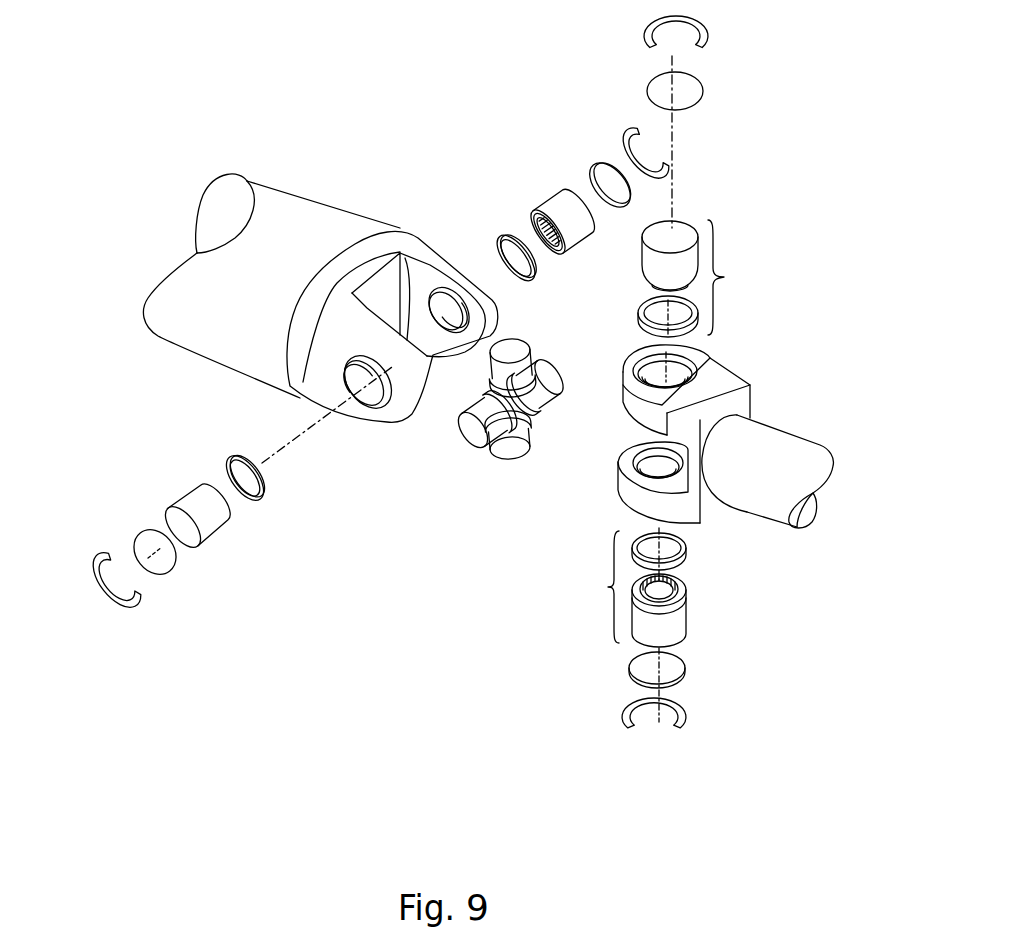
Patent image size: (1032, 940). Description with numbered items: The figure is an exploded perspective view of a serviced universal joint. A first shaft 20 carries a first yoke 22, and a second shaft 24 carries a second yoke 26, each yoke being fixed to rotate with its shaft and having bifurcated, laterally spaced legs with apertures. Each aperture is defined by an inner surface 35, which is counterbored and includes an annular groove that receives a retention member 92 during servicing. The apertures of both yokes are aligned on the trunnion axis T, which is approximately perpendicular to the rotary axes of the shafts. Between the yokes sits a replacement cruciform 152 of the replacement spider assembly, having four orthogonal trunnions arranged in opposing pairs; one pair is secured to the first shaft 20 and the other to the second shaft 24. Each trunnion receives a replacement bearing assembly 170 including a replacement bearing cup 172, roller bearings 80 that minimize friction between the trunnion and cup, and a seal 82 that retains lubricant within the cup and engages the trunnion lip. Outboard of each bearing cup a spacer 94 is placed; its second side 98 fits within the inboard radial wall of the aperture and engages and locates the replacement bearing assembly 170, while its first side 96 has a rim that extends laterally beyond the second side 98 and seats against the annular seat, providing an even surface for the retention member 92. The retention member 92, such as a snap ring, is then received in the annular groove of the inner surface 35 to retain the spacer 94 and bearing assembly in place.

The first shaft 20 is at (305, 210).
The first yoke 22 is at (428, 248).
The second shaft 24 is at (773, 440).
The second yoke 26 is at (702, 362).
The inner surface 35 is at (455, 338).
The roller bearings 80 is at (530, 232).
The seal 82 is at (275, 490).
The retention member 92 is at (707, 40).
The spacer 94 is at (598, 183).
The first side 96 is at (140, 538).
The second side 98 is at (672, 665).
The replacement cruciform 152 is at (495, 457).
The replacement bearing assembly 170 is at (220, 528).
The replacement bearing cup 172 is at (672, 632).
The trunnion axis T is at (323, 430).